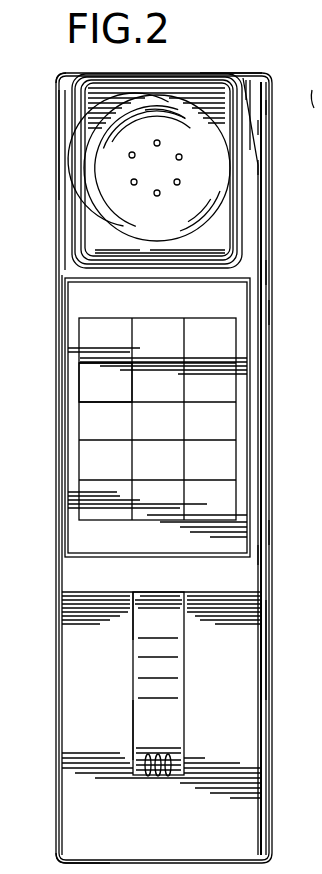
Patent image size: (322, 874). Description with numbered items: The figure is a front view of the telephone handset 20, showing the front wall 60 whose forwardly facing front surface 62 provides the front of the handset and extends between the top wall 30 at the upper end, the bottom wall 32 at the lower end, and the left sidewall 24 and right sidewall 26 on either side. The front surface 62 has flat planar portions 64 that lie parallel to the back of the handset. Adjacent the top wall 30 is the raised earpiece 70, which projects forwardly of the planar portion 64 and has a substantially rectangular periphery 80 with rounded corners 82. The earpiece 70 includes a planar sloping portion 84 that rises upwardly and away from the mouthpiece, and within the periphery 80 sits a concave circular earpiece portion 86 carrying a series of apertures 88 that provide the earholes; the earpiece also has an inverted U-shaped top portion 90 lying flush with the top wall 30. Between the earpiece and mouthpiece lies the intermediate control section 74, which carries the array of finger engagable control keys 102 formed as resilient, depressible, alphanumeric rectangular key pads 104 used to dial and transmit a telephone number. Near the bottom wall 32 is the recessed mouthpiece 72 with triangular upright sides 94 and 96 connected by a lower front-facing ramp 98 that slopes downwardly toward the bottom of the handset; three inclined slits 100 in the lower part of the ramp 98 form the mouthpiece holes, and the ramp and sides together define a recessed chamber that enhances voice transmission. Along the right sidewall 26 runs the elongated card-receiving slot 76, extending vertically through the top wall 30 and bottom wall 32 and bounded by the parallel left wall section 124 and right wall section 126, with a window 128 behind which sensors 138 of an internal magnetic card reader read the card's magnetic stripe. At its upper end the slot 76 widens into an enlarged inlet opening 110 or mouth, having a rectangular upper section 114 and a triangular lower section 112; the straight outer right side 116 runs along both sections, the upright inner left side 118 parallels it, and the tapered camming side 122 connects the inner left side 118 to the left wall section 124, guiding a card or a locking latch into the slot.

The telephone handset 20 is at (50, 550).
The left sidewall 24 is at (57, 641).
The right sidewall 26 is at (273, 649).
The top wall 30 is at (232, 75).
The bottom wall 32 is at (85, 865).
The front wall 60 is at (78, 268).
The front surface 62 is at (73, 780).
The planar portion 64 is at (70, 143).
The earpiece 70 is at (145, 118).
The mouthpiece 72 is at (124, 715).
The intermediate control section 74 is at (85, 302).
The card-receiving slot 76 is at (266, 620).
The periphery 80 is at (197, 73).
The rounded corners 82 is at (77, 91).
The sloping portion 84 is at (98, 90).
The concave circular earpiece portion 86 is at (85, 172).
The apertures 88 is at (157, 196).
The top portion 90 is at (310, 74).
The triangular upright side 94 is at (133, 666).
The triangular upright side 96 is at (184, 687).
The ramp 98 is at (150, 619).
The inclined slits 100 is at (157, 778).
The control keys 102 is at (85, 374).
The key pads 104 is at (237, 424).
The card-receiving inlet opening 110 is at (255, 128).
The triangular lower section 112 is at (261, 160).
The rectangular upper section 114 is at (251, 80).
The outer right side 116 is at (266, 106).
The inner left side 118 is at (250, 86).
The camming side 122 is at (262, 148).
The left wall section 124 is at (265, 274).
The right wall section 126 is at (267, 313).
The window 128 is at (268, 534).
The sensors 138 is at (261, 550).